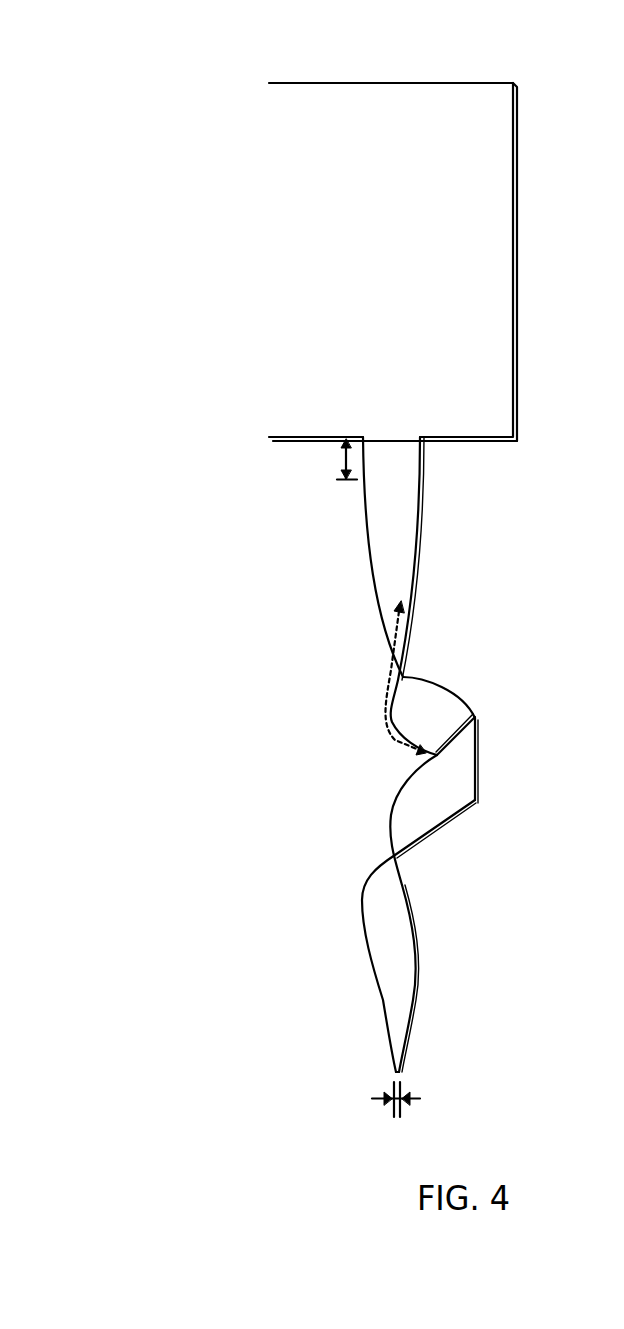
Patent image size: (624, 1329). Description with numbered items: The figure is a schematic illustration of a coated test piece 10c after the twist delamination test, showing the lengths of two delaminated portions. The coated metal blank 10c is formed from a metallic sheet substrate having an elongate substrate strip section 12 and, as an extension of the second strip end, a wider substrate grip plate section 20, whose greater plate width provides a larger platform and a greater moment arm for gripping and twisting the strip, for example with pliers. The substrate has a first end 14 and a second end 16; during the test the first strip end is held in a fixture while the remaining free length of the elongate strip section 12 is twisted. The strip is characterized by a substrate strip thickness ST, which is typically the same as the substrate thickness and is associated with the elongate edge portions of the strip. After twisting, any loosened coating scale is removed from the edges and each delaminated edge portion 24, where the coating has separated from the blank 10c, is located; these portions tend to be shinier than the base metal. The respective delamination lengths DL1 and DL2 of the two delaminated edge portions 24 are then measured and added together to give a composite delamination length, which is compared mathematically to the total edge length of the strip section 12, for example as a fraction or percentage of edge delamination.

The coated metal blank 10c is at (86, 40).
The substrate grip plate section 20 is at (258, 249).
The second end 16 is at (447, 457).
The delaminated edge portion 24 is at (358, 493).
The elongate substrate strip section 12 is at (492, 782).
The first end 14 is at (434, 887).
The delamination length DL1 is at (338, 460).
The delamination length DL2 is at (374, 710).
The substrate strip thickness ST is at (415, 1090).